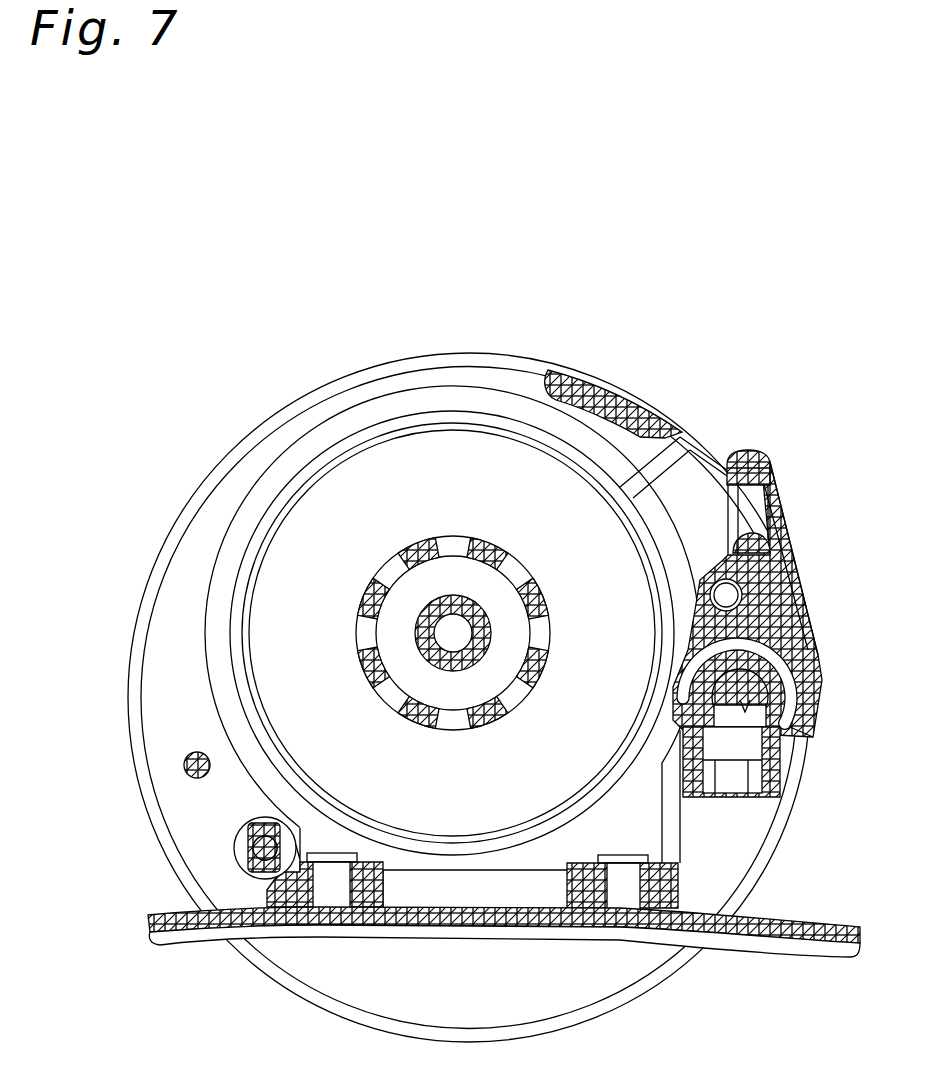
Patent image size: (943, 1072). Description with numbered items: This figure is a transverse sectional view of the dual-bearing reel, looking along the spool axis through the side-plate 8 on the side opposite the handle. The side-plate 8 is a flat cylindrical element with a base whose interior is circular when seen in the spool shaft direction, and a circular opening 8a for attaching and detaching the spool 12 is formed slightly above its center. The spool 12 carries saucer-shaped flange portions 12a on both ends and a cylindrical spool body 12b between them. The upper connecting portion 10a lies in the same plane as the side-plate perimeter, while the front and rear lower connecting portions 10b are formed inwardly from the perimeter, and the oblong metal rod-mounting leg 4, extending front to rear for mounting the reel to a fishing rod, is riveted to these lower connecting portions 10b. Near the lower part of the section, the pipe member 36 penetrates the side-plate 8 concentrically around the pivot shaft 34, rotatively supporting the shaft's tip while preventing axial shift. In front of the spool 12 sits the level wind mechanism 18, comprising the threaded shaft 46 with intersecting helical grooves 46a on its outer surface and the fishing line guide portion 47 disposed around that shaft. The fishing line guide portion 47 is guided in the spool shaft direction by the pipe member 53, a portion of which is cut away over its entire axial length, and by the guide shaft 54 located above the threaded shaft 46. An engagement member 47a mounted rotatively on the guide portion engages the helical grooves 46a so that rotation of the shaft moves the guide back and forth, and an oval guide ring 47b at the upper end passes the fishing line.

The rod-mounting leg 4 is at (800, 916).
The side-plate 8 is at (510, 353).
The circular opening 8a is at (408, 450).
The upper connecting portion 10a is at (575, 385).
The lower connecting portion 10b is at (490, 845).
The spool 12 is at (298, 700).
The flange portion 12a is at (325, 515).
The spool body 12b is at (368, 603).
The level wind mechanism 18 is at (754, 445).
The pivot shaft 34 is at (258, 858).
The pipe member 36 is at (248, 835).
The threaded shaft 46 is at (778, 665).
The helical grooves 46a is at (765, 633).
The fishing line guide portion 47 is at (768, 602).
The engagement member 47a is at (740, 745).
The guide ring 47b is at (775, 485).
The pipe member 53 is at (800, 717).
The guide shaft 54 is at (768, 575).